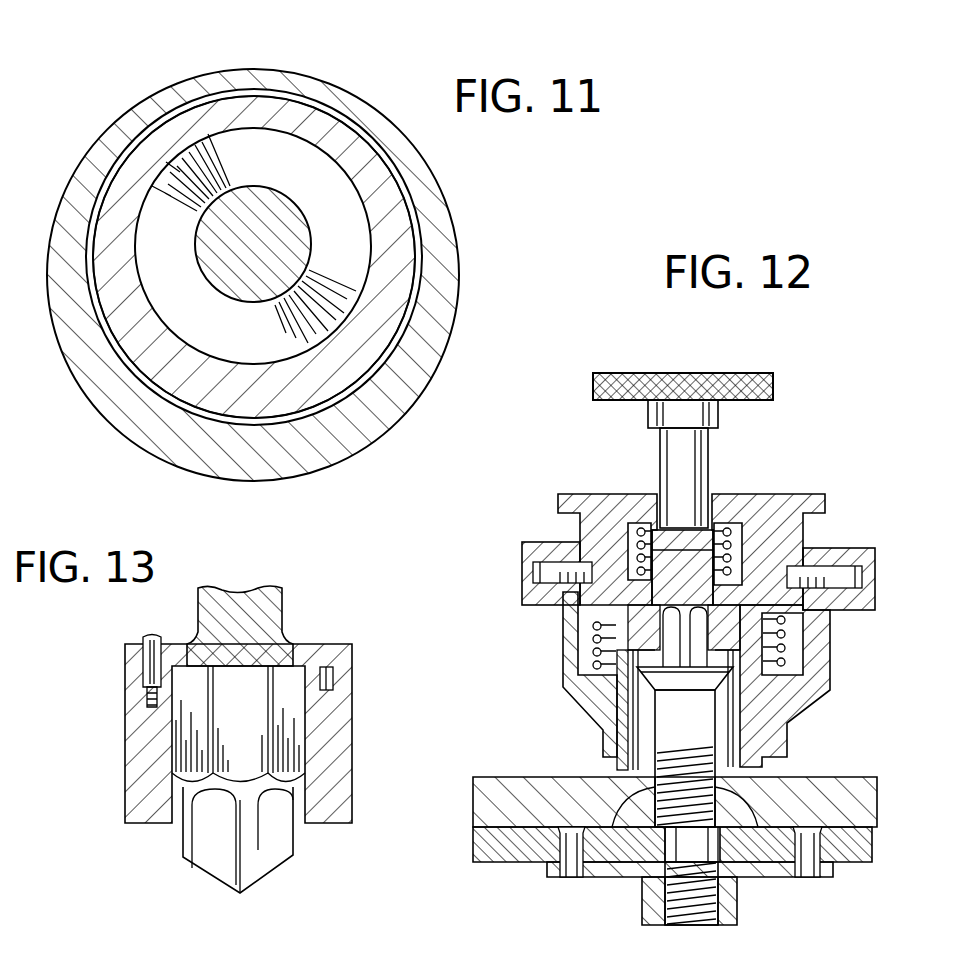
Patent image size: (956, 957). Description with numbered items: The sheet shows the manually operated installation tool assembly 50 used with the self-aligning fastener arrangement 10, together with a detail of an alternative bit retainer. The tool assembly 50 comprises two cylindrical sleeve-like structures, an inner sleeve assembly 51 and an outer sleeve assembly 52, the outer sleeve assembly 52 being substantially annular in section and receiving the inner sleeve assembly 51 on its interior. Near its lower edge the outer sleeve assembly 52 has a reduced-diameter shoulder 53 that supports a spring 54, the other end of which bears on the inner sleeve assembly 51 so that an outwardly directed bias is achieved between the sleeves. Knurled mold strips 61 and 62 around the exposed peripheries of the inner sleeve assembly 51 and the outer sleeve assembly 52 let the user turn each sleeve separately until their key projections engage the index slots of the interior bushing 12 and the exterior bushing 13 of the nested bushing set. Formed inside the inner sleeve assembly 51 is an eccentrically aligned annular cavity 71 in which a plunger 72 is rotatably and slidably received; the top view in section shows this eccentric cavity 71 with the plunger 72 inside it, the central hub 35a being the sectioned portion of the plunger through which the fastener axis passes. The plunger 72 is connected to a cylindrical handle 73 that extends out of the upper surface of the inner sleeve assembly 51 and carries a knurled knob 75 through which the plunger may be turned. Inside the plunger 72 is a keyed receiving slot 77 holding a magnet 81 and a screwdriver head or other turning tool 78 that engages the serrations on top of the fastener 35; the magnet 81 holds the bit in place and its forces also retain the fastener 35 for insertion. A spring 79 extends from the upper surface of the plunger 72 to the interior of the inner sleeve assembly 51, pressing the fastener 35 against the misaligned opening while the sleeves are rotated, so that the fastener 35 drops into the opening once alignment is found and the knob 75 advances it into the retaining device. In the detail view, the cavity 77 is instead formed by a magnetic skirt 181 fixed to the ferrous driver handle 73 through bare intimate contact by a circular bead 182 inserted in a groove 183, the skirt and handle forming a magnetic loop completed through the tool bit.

In FIG. 12, the self-aligning fastener arrangement 10 is at (742, 910).
In FIG. 11, the interior bushing 12 is at (254, 100).
In FIG. 12, the interior bushing 12 is at (637, 797).
In FIG. 12, the exterior bushing 13 is at (633, 810).
In FIG. 11, the fastener 35 is at (226, 275).
In FIG. 12, the fastener 35 is at (700, 746).
In FIG. 11, the hub 35a is at (273, 203).
In FIG. 12, the tool assembly 50 is at (882, 573).
In FIG. 12, the inner sleeve assembly 51 is at (642, 494).
In FIG. 12, the outer sleeve assembly 52 is at (830, 650).
In FIG. 12, the shoulder 53 is at (808, 703).
In FIG. 12, the spring 54 is at (580, 660).
In FIG. 12, the mold strip 61 is at (827, 503).
In FIG. 12, the mold strip 62 is at (520, 545).
In FIG. 11, the annular cavity 71 is at (365, 216).
In FIG. 12, the plunger 72 is at (637, 612).
In FIG. 12, the handle 73 is at (693, 446).
In FIG. 13, the handle 73 is at (267, 607).
In FIG. 12, the knurled knob 75 is at (690, 373).
In FIG. 12, the receiving slot 77 is at (685, 693).
In FIG. 12, the turning tool 78 is at (690, 640).
In FIG. 12, the spring 79 is at (730, 527).
In FIG. 12, the magnet 81 is at (684, 547).
In FIG. 13, the magnetic skirt 181 is at (337, 751).
In FIG. 13, the circular bead 182 is at (325, 677).
In FIG. 13, the groove 183 is at (337, 678).